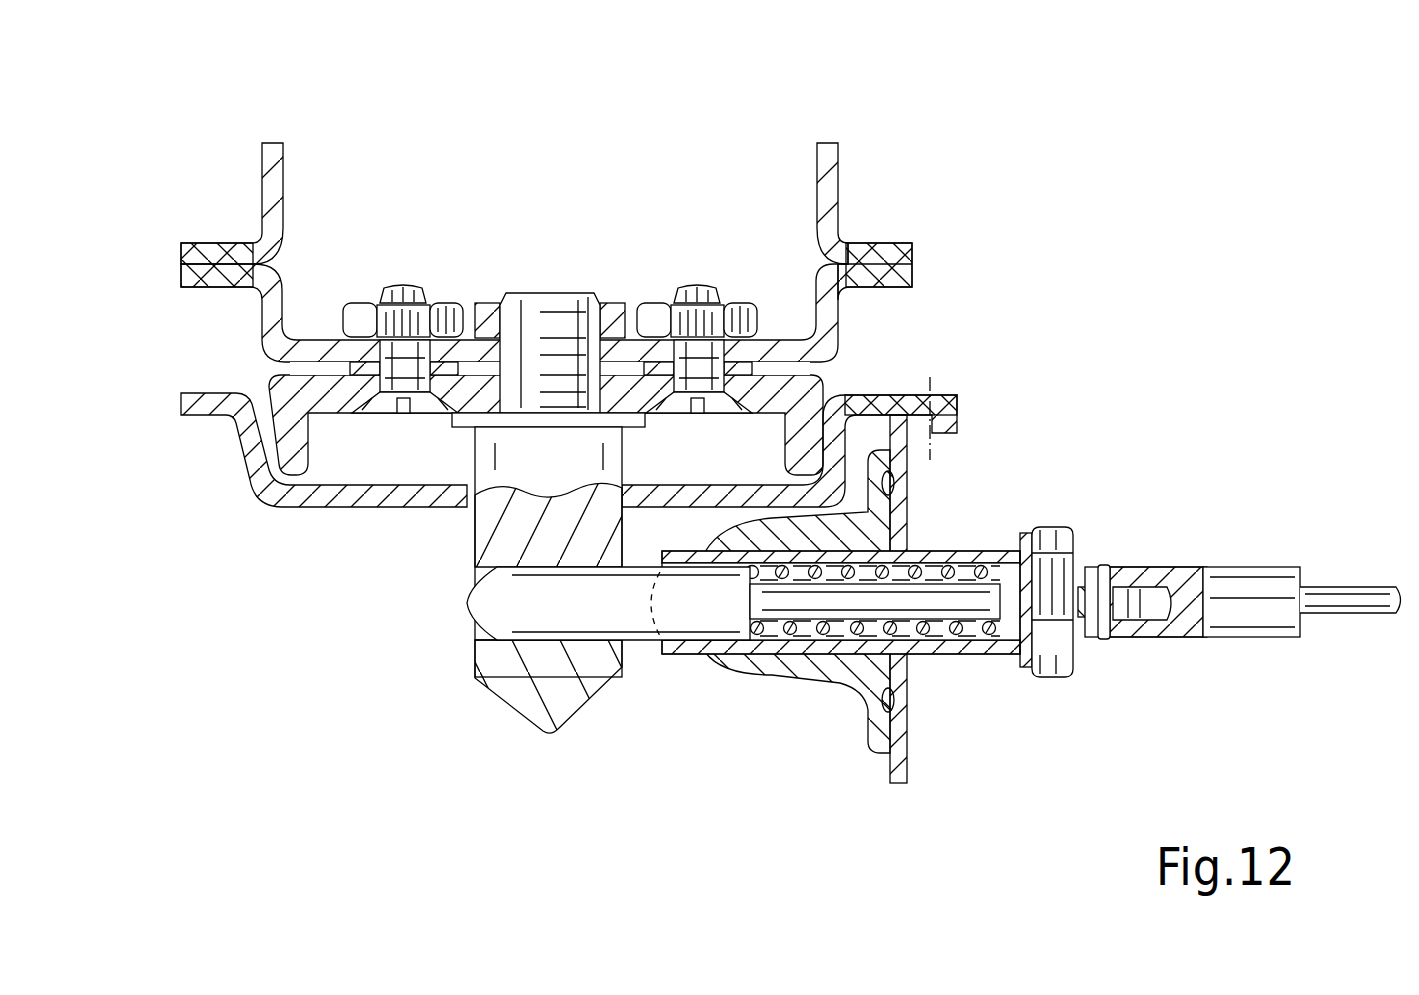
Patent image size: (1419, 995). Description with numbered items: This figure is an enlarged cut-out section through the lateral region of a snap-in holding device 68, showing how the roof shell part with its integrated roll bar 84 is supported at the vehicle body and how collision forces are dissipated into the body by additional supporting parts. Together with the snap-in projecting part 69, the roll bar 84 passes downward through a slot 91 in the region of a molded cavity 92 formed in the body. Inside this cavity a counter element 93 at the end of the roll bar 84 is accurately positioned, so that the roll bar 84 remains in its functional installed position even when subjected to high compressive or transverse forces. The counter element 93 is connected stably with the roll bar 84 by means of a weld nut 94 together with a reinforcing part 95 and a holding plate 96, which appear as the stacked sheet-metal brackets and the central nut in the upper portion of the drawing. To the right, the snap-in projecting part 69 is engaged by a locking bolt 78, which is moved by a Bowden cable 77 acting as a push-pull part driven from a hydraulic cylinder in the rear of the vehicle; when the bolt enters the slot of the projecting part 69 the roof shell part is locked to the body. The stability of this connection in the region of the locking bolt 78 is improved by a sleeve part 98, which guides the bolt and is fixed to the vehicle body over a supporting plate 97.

The roll bar 84 is at (333, 143).
The weld nut 94 is at (492, 303).
The reinforcing part 95 is at (829, 188).
The holding plate 96 is at (916, 279).
The supporting plate 97 is at (903, 507).
The counter element 93 is at (283, 403).
The molded cavity 92 is at (333, 467).
The slot 91 is at (467, 505).
The snap-in projecting part 69 is at (497, 677).
The snap-in holding device 68 is at (624, 733).
The locking bolt 78 is at (713, 620).
The sleeve part 98 is at (837, 668).
The Bowden cable 77 is at (1348, 608).